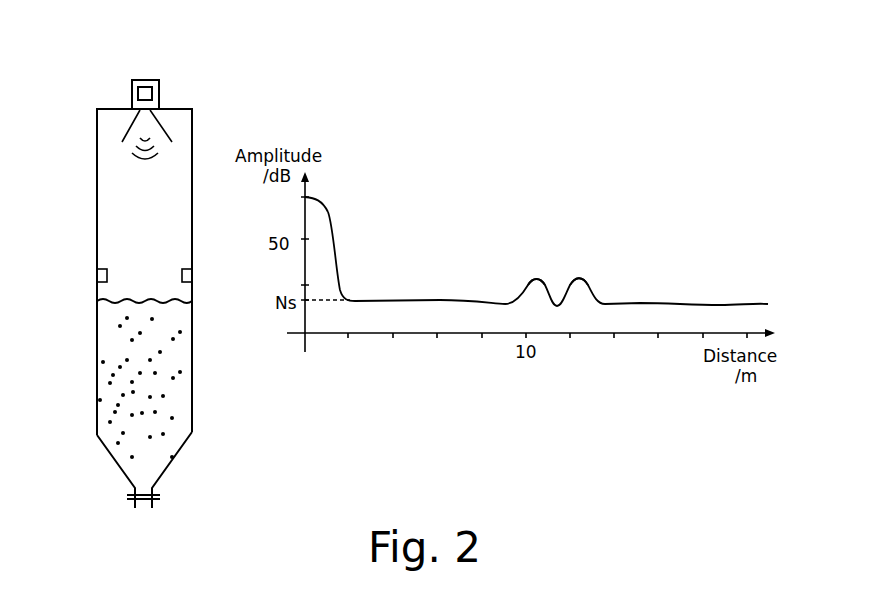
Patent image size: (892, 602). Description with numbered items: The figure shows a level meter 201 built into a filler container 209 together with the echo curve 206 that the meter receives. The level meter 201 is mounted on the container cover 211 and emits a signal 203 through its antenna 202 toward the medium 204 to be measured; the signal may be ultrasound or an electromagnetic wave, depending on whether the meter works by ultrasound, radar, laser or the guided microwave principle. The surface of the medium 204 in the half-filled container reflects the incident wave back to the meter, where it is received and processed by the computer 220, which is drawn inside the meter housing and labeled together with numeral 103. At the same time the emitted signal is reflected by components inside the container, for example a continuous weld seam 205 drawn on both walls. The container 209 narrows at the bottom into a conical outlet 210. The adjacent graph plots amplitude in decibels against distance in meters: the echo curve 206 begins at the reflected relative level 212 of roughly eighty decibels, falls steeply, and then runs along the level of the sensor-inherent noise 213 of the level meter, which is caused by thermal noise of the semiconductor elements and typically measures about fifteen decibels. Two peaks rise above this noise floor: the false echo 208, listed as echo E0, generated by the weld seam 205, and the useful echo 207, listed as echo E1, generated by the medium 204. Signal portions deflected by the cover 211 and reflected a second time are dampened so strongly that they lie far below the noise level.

The level meter 201 is at (133, 80).
The computer 220 is at (153, 92).
The antenna / transceiver unit 103 is at (145, 93).
The antenna 202 is at (170, 137).
The signal 203 is at (133, 157).
The medium 204 is at (113, 338).
The continuous weld seam 205 is at (184, 268).
The echo curve 206 is at (340, 255).
The useful echo 207 is at (583, 295).
The false echo 208 is at (533, 295).
The filler container 209 is at (193, 392).
The container outlet funnel 210 is at (170, 462).
The container cover 211 is at (107, 108).
The reflected relative level 212 is at (307, 197).
The sensor-inherent noise 213 is at (295, 308).
The false echo E0 is at (537, 277).
The useful echo E1 is at (580, 277).